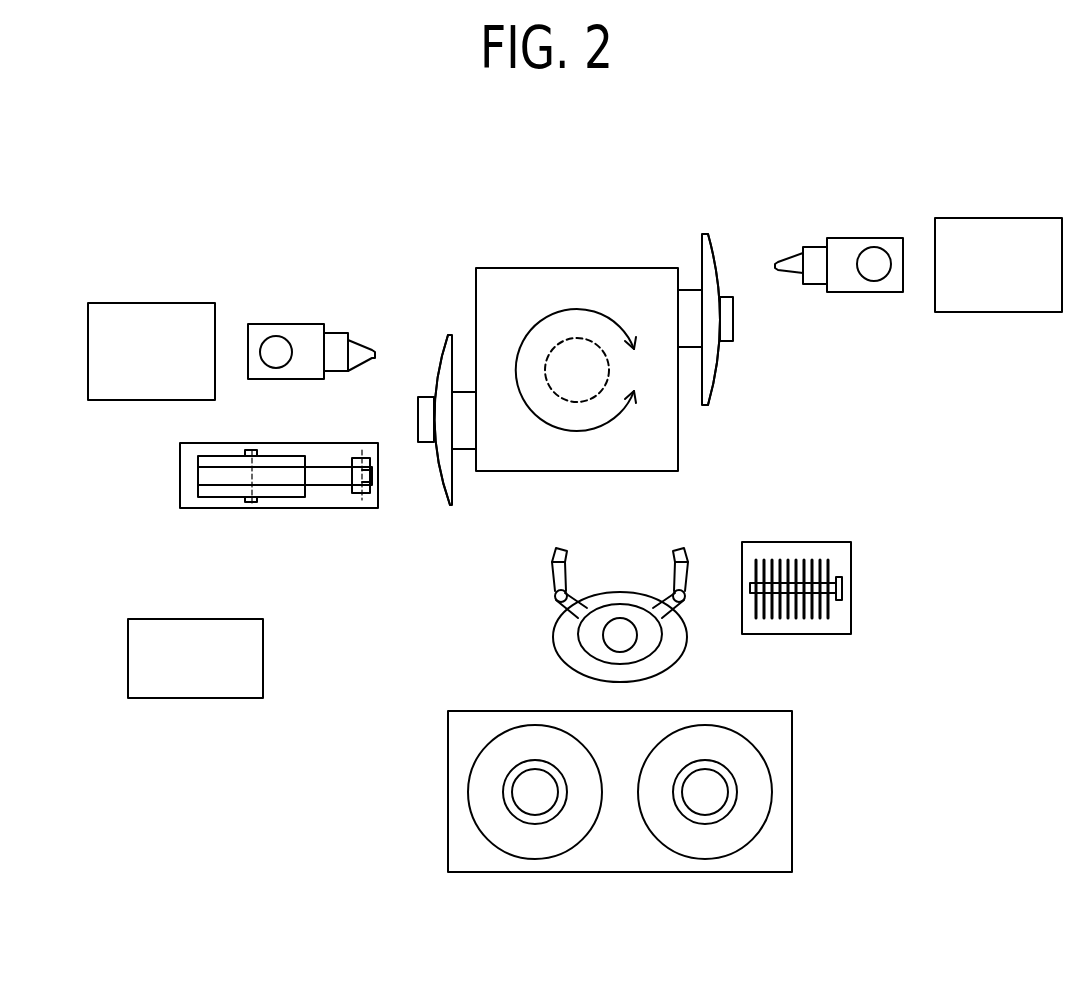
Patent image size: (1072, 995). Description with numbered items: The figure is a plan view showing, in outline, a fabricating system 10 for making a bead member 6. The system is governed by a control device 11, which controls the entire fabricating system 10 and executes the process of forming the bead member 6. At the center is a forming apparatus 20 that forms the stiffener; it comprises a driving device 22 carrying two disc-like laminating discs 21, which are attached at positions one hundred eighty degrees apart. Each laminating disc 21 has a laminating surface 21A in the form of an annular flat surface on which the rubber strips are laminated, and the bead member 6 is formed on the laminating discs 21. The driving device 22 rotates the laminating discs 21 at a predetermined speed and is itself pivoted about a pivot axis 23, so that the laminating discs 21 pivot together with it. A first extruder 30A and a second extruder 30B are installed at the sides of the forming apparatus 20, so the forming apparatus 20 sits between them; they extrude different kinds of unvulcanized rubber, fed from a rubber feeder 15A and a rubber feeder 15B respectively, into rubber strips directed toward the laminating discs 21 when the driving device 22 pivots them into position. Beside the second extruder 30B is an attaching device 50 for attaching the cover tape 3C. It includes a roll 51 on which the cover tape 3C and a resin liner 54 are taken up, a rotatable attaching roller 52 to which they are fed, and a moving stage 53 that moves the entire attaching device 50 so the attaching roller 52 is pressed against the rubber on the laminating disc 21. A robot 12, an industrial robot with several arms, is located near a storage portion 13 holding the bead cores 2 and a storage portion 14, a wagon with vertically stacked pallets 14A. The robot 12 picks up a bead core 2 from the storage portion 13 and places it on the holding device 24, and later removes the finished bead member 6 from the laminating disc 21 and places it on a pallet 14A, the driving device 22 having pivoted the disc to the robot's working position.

The fabricating system 10 is at (400, 210).
The rubber feeder 15A is at (1018, 235).
The rubber feeder 15B is at (147, 315).
The first extruder 30A is at (870, 243).
The second extruder 30B is at (297, 335).
The forming apparatus 20 is at (577, 327).
The driving device 22 is at (512, 283).
The pivot axis 23 is at (577, 353).
The laminating disc 21 is at (447, 358).
The laminating surface 21A is at (440, 367).
The holding device 24 is at (427, 413).
The attaching device 50 is at (269, 490).
The moving stage 53 is at (187, 453).
The roll 51 is at (222, 495).
The liner 54 is at (318, 488).
The attaching roller 52 is at (353, 497).
The cover tape 3C is at (365, 477).
The robot 12 is at (567, 640).
The storage portion 13 is at (832, 560).
The bead core 2 is at (755, 560).
The storage portion 14 is at (634, 758).
The pallet 14A is at (475, 720).
The bead member 6 is at (478, 785).
The control device 11 is at (188, 688).